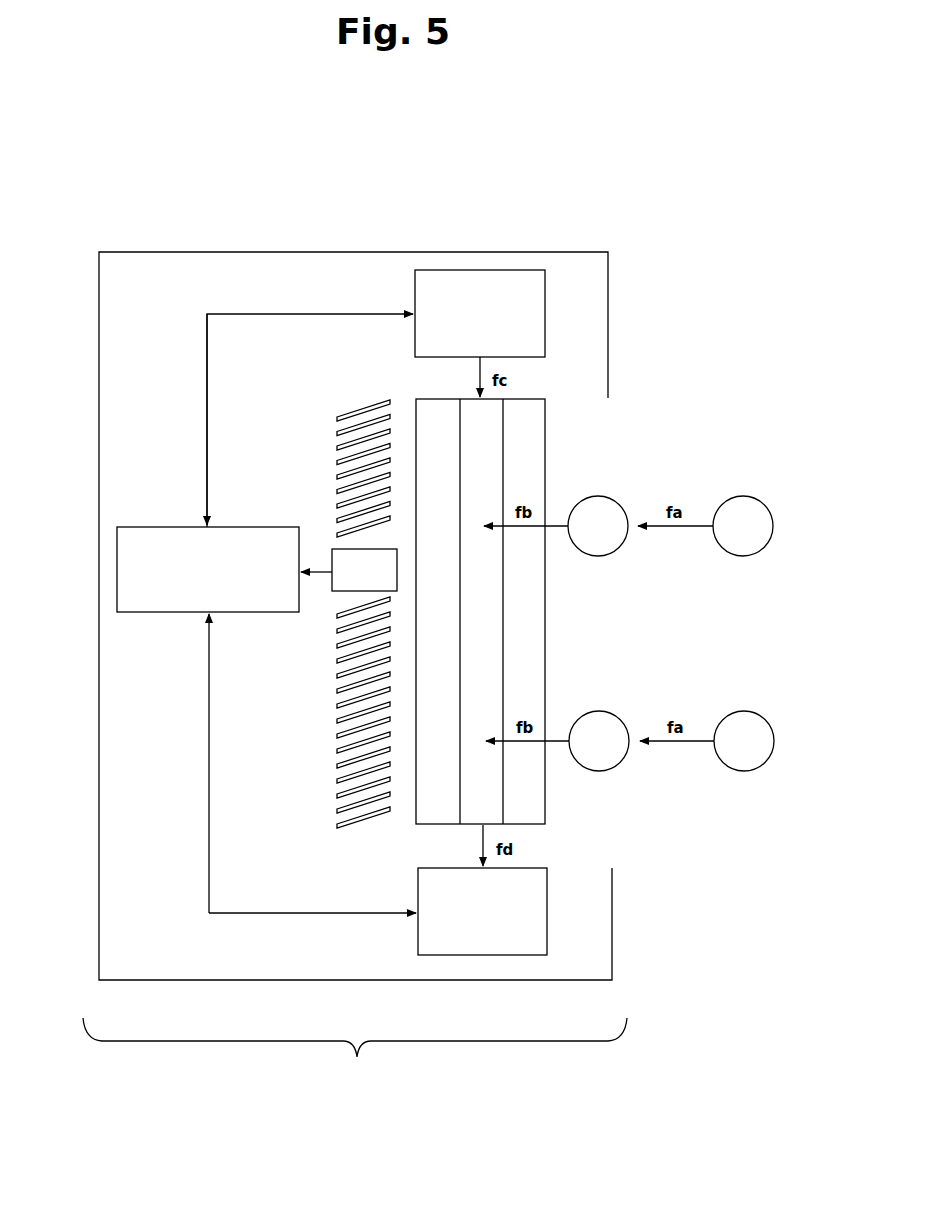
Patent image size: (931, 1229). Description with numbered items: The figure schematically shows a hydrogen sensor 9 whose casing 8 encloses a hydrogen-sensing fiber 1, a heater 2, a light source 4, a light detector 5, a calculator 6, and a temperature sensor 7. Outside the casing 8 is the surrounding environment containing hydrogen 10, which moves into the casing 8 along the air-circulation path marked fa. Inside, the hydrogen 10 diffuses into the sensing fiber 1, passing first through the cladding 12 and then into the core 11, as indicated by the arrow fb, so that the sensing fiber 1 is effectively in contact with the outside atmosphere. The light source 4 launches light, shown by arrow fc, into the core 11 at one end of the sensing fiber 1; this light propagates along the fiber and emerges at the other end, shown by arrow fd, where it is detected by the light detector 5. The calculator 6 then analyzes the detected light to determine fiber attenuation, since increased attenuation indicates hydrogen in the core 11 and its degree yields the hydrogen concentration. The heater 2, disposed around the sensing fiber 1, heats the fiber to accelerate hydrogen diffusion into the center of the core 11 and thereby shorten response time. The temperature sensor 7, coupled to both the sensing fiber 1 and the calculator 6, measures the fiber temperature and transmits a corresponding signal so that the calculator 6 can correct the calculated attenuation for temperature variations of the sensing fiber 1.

The hydrogen-sensing fiber 1 is at (469, 634).
The heater 2 is at (340, 438).
The light source 4 is at (545, 308).
The light detector 5 is at (538, 878).
The calculator 6 is at (181, 598).
The temperature sensor 7 is at (342, 591).
The casing 8 is at (290, 252).
The hydrogen sensor 9 is at (355, 1053).
The hydrogen 10 is at (614, 499).
The core 11 is at (490, 586).
The cladding 12 is at (527, 646).